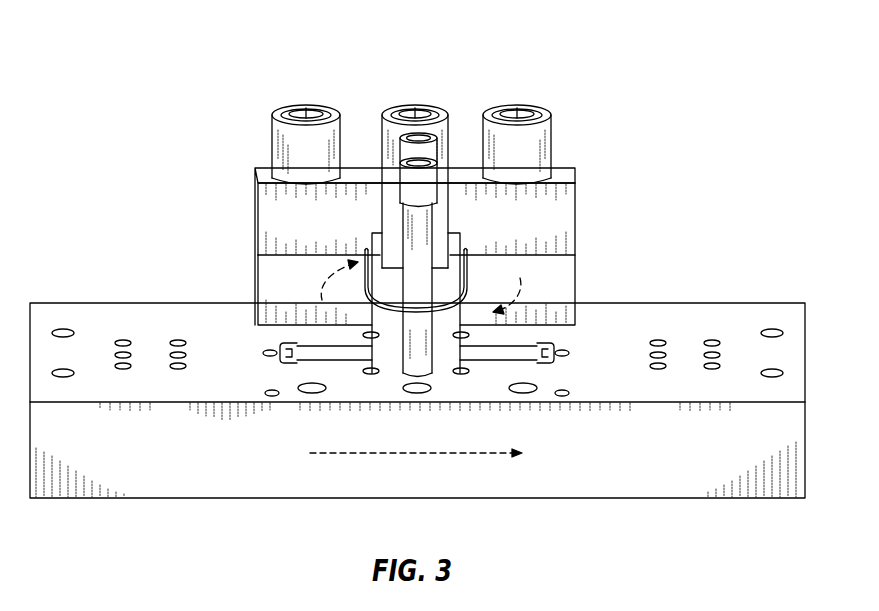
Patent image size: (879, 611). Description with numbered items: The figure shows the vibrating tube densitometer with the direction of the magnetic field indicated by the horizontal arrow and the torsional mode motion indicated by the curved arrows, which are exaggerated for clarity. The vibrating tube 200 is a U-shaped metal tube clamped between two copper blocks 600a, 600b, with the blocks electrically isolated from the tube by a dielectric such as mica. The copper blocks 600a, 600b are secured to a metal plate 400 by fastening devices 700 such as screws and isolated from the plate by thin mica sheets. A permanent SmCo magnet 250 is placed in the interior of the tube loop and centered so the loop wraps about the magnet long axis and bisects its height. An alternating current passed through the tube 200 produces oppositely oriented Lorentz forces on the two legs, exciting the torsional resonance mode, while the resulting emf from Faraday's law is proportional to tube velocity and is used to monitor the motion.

The fastening devices 700 is at (285, 105).
The copper block 600a is at (257, 224).
The copper block 600b is at (257, 278).
The vibrating tube 200 is at (468, 290).
The permanent magnet 250 is at (393, 342).
The metal plate 400 is at (510, 498).